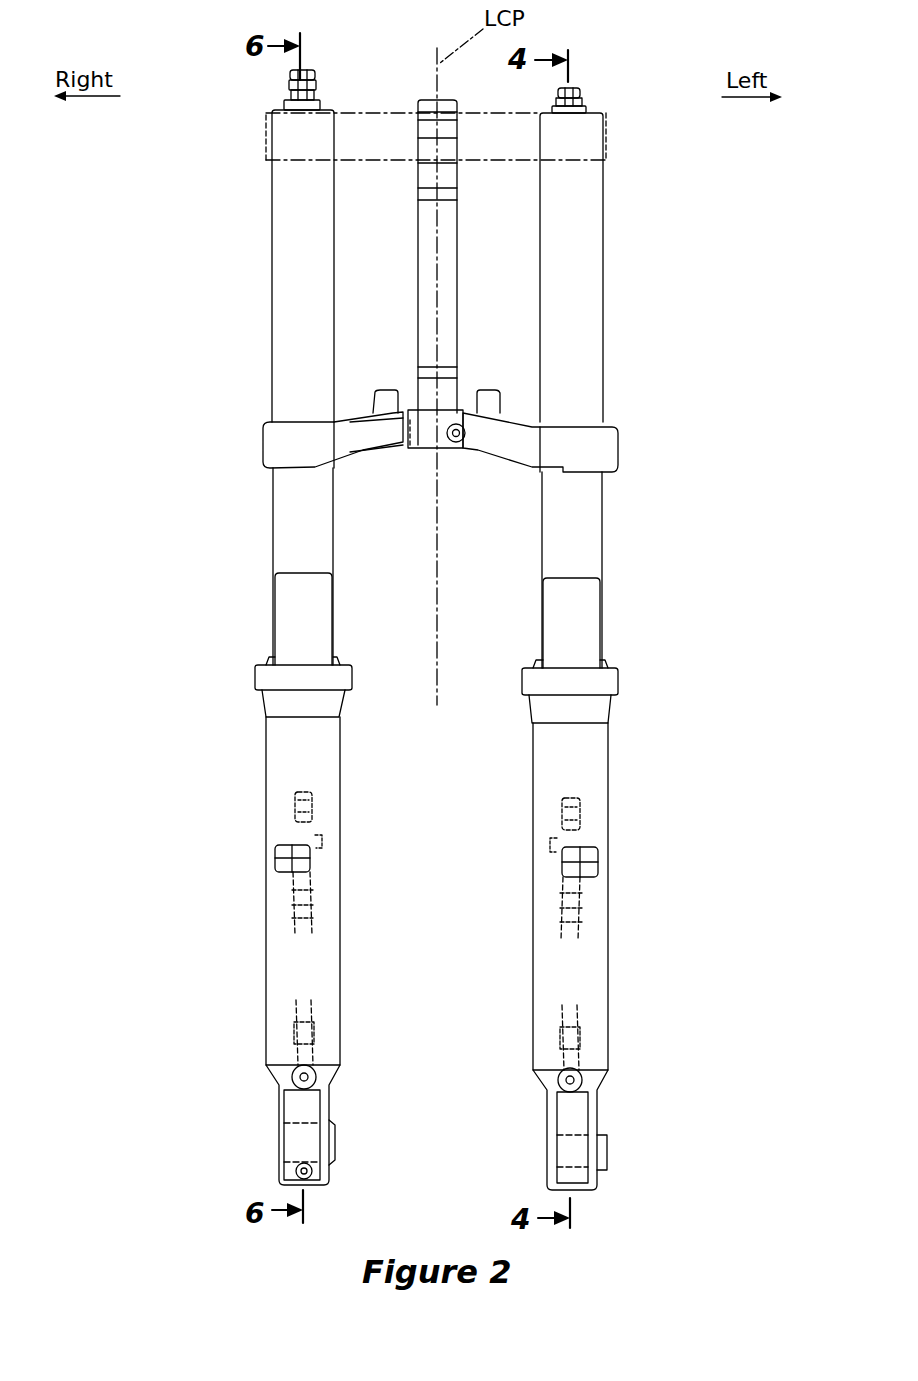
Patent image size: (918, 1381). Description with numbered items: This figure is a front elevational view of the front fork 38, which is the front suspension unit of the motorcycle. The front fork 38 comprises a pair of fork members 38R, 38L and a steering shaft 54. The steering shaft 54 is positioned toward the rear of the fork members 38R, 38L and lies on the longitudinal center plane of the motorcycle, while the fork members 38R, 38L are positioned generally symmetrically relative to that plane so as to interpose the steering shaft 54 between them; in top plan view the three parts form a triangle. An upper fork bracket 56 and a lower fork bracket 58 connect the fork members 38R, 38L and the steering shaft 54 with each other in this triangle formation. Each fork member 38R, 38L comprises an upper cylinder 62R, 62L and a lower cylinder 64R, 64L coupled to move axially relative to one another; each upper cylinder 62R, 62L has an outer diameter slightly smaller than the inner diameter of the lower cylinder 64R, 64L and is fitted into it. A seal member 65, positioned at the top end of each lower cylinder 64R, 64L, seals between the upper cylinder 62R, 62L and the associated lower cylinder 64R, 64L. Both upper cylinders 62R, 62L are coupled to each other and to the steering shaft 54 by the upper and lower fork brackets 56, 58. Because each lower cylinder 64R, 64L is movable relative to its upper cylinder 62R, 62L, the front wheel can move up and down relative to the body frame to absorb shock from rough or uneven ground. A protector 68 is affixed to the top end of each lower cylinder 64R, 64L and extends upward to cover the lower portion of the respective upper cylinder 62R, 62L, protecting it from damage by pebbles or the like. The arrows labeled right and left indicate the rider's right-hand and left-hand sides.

The front fork 38 is at (232, 269).
The right fork member 38R is at (264, 341).
The left fork member 38L is at (614, 309).
The steering shaft 54 is at (455, 262).
The upper fork bracket 56 is at (393, 114).
The lower fork bracket 58 is at (502, 455).
The right upper cylinder 62R is at (273, 492).
The left upper cylinder 62L is at (603, 505).
The right lower cylinder 64R is at (266, 780).
The left lower cylinder 64L is at (608, 800).
The seal member 65 is at (268, 657).
The protector 68 is at (290, 573).